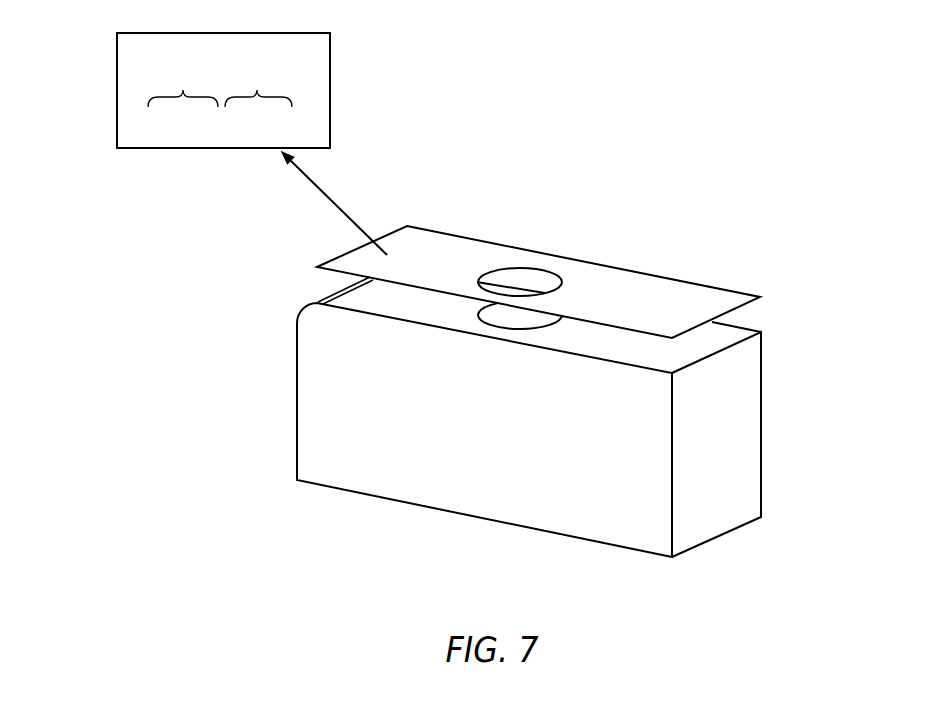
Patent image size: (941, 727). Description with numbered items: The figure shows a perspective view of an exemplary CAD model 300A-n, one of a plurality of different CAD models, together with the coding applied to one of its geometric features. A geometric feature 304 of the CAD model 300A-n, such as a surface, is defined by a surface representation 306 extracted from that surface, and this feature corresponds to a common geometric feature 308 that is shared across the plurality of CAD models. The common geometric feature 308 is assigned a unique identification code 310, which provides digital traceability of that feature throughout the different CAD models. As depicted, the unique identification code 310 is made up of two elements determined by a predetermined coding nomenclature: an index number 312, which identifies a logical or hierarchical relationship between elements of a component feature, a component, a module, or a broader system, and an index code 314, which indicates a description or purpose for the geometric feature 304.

The CAD model 300A-n is at (604, 351).
The geometric feature 304 is at (750, 332).
The surface representation 306 is at (653, 286).
The common geometric feature 308 is at (487, 233).
The unique identification code 310 is at (223, 135).
The index number 312 is at (183, 83).
The index code 314 is at (258, 83).